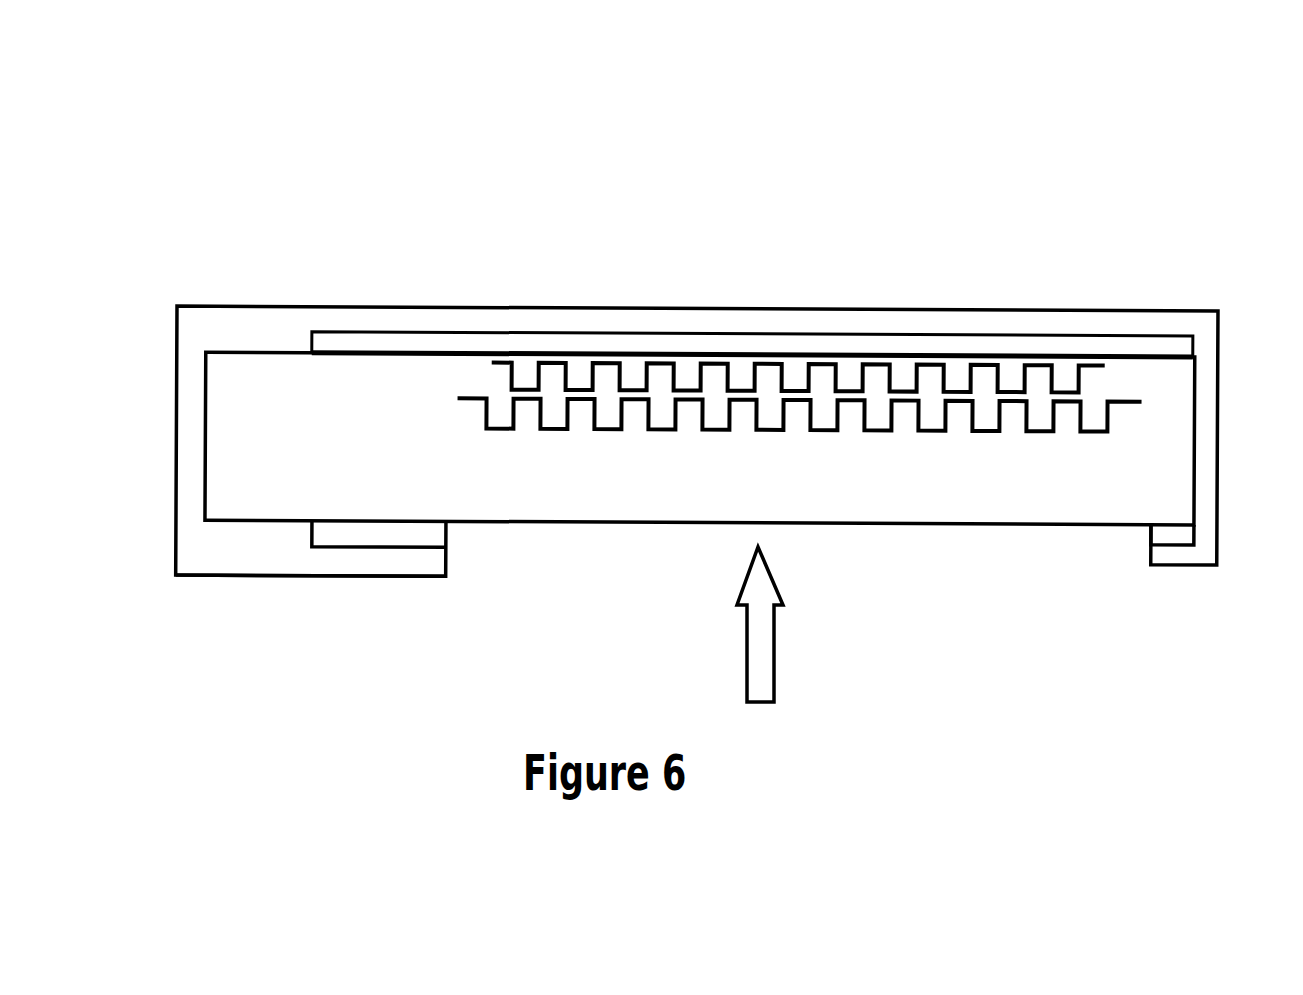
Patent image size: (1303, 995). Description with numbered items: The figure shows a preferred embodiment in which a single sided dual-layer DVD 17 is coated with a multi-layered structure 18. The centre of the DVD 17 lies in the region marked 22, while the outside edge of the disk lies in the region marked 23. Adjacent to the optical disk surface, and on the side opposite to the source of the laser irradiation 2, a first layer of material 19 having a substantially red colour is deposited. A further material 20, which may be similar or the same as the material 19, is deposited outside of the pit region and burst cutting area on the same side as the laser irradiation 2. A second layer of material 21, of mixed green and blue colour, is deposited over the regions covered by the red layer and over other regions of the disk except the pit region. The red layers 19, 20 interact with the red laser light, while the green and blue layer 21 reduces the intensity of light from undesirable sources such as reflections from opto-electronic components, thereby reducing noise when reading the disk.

The source of the laser irradiation 2 is at (780, 670).
The single sided dual-layer DVD 17 is at (278, 379).
The multi-layered structure 18 is at (1203, 300).
The first layer of material 19 is at (738, 345).
The material 20 is at (410, 530).
The second layer of material 21 is at (247, 557).
The centre of the DVD 22 is at (138, 469).
The outside edge of the DVD 23 is at (1302, 472).